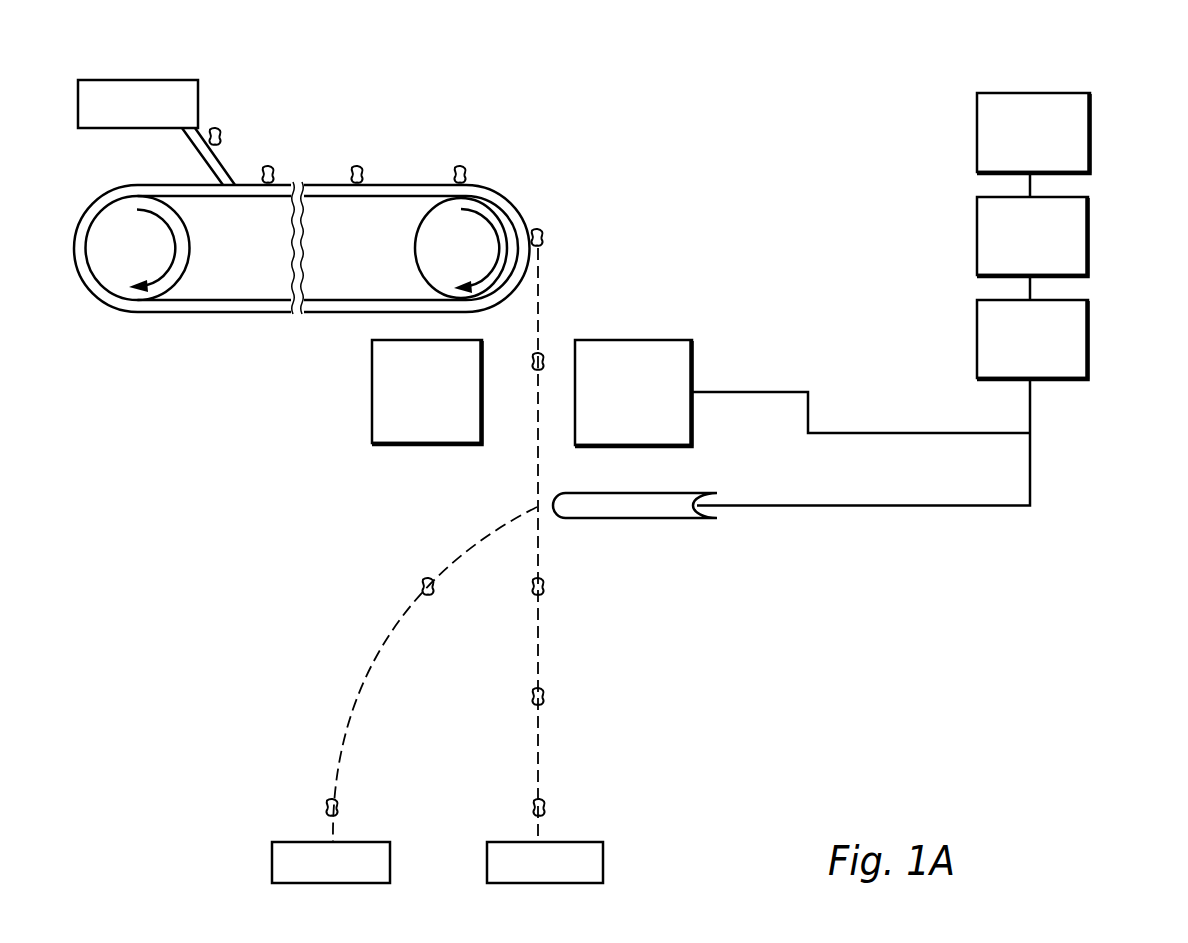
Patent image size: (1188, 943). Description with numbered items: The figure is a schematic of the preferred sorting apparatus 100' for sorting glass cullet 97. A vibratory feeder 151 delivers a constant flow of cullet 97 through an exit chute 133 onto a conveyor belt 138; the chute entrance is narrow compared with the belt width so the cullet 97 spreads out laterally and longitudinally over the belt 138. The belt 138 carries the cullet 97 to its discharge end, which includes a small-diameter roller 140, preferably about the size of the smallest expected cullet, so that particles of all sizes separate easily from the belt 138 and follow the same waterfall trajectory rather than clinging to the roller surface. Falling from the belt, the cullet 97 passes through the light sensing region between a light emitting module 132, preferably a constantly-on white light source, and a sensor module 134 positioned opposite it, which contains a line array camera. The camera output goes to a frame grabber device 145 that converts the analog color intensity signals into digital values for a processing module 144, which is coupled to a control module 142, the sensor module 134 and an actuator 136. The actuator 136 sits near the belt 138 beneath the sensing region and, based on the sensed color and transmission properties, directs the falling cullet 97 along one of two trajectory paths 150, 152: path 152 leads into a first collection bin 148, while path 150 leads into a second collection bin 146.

The sorting apparatus 100' is at (1006, 22).
The vibratory feeder 151 is at (200, 94).
The exit chute 133 is at (203, 158).
The conveyor belt 138 is at (393, 183).
The roller 140 is at (495, 215).
The cullet 97 is at (459, 166).
The light emitting module 132 is at (372, 425).
The sensor module 134 is at (632, 340).
The actuator 136 is at (640, 520).
The control module 142 is at (1091, 125).
The processing module 144 is at (1089, 228).
The frame grabber device 145 is at (1089, 330).
The trajectory path 152 is at (540, 638).
The trajectory path 150 is at (352, 712).
The second collection bin 146 is at (272, 864).
The first collection bin 148 is at (603, 862).